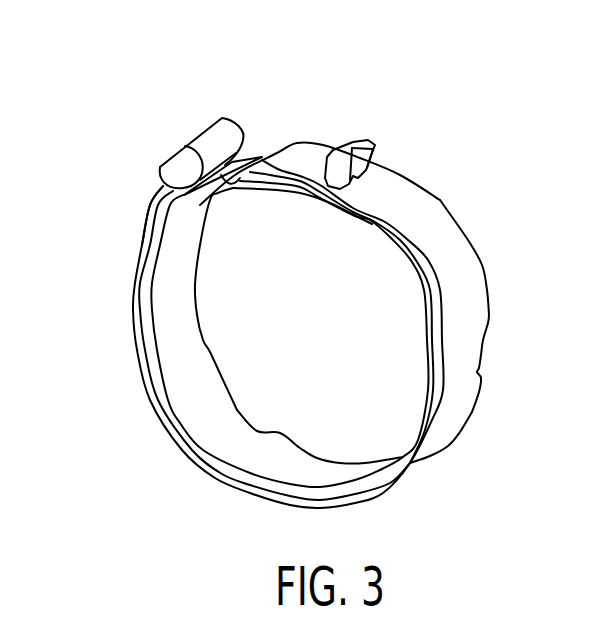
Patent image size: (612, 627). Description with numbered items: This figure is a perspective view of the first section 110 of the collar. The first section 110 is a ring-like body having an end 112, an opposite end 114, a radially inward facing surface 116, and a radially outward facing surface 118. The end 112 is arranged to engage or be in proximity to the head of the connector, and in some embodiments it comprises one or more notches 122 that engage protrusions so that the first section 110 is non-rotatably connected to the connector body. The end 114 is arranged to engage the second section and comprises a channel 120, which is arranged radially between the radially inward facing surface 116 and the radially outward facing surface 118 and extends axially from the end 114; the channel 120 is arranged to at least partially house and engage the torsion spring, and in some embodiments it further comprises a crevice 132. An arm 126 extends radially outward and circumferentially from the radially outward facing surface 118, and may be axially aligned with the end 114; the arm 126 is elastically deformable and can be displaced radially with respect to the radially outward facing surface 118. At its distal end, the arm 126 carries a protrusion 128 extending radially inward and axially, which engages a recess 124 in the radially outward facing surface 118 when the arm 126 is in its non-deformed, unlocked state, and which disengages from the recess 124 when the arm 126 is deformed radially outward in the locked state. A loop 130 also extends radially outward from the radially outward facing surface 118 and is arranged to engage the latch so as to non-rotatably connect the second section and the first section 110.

The first section 110 is at (112, 102).
The end 112 is at (481, 267).
The end 114 is at (152, 354).
The radially inward facing surface 116 is at (305, 458).
The radially outward facing surface 118 is at (437, 227).
The channel 120 is at (156, 404).
The notch 122 is at (494, 366).
The recess 124 is at (234, 191).
The arm 126 is at (157, 203).
The protrusion 128 is at (233, 125).
The loop 130 is at (363, 145).
The crevice 132 is at (345, 222).